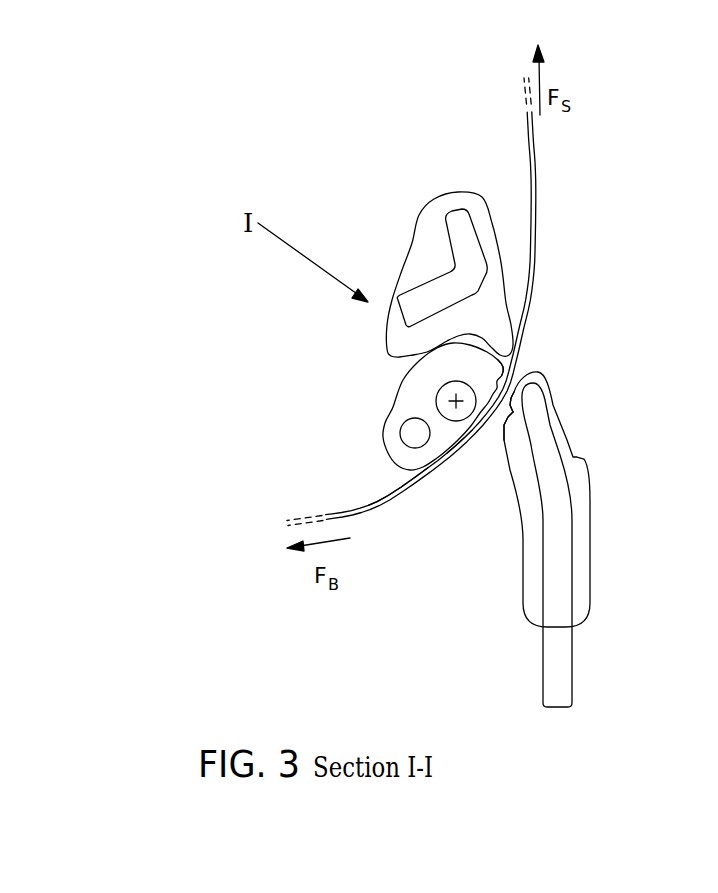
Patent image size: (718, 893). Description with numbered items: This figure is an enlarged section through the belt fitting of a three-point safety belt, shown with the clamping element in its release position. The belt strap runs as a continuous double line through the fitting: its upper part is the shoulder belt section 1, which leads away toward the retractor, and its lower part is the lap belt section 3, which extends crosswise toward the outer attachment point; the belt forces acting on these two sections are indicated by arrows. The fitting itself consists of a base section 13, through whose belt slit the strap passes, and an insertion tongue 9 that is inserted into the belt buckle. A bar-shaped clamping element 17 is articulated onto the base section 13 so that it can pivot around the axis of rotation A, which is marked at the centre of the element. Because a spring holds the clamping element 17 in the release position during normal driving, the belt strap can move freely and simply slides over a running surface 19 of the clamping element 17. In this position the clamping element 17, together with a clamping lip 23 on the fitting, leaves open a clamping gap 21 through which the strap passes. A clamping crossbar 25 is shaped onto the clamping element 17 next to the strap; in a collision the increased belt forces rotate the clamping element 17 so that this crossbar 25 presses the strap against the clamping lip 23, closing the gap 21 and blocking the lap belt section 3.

The shoulder belt section 1 is at (533, 168).
The lap belt section 3 is at (381, 502).
The insertion tongue 9 is at (570, 668).
The base section 13 is at (500, 268).
The clamping element 17 is at (395, 402).
The running surface 19 is at (458, 445).
The clamping gap 21 is at (513, 402).
The clamping lip 23 is at (507, 418).
The clamping crossbar 25 is at (503, 367).
The axis of rotation A is at (456, 401).